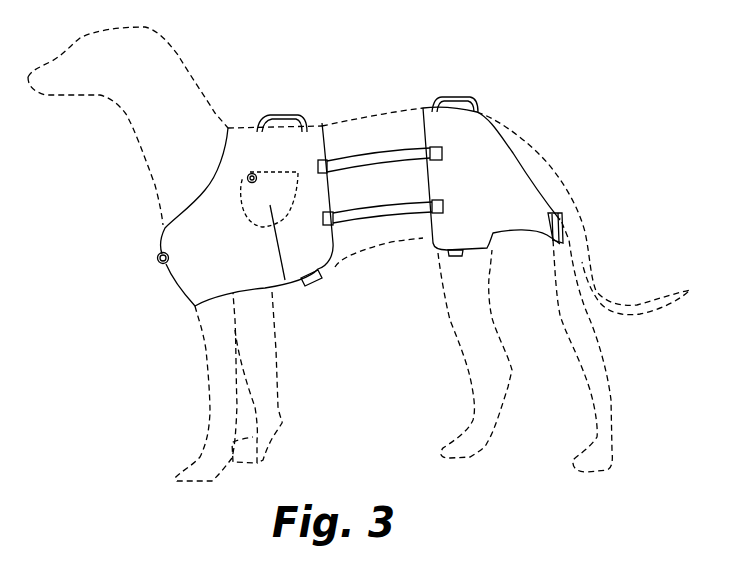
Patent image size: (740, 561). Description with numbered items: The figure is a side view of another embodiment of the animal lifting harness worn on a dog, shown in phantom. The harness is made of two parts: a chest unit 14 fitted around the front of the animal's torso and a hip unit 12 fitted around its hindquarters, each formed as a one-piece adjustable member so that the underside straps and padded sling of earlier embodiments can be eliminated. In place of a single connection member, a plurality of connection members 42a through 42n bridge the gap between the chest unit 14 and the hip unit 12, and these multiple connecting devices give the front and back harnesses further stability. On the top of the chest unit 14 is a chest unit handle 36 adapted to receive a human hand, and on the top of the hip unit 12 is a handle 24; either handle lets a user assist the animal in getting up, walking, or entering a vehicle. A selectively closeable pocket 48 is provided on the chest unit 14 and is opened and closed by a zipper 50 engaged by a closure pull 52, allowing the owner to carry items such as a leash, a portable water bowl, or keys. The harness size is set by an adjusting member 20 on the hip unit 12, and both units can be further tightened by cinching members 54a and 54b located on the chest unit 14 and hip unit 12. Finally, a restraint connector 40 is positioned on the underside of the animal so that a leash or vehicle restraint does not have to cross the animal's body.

The hip unit 12 is at (470, 162).
The chest unit 14 is at (190, 275).
The adjusting member 20 is at (563, 237).
The handle 24 is at (472, 94).
The chest unit handle 36 is at (280, 115).
The restraint connector 40 is at (157, 262).
The connection member 42a is at (380, 142).
The connection member 42n is at (382, 214).
The selectively closeable pocket 48 is at (285, 280).
The zipper 50 is at (265, 170).
The closure pull 52 is at (247, 173).
The cinching member 54a is at (313, 284).
The cinching member 54b is at (457, 254).